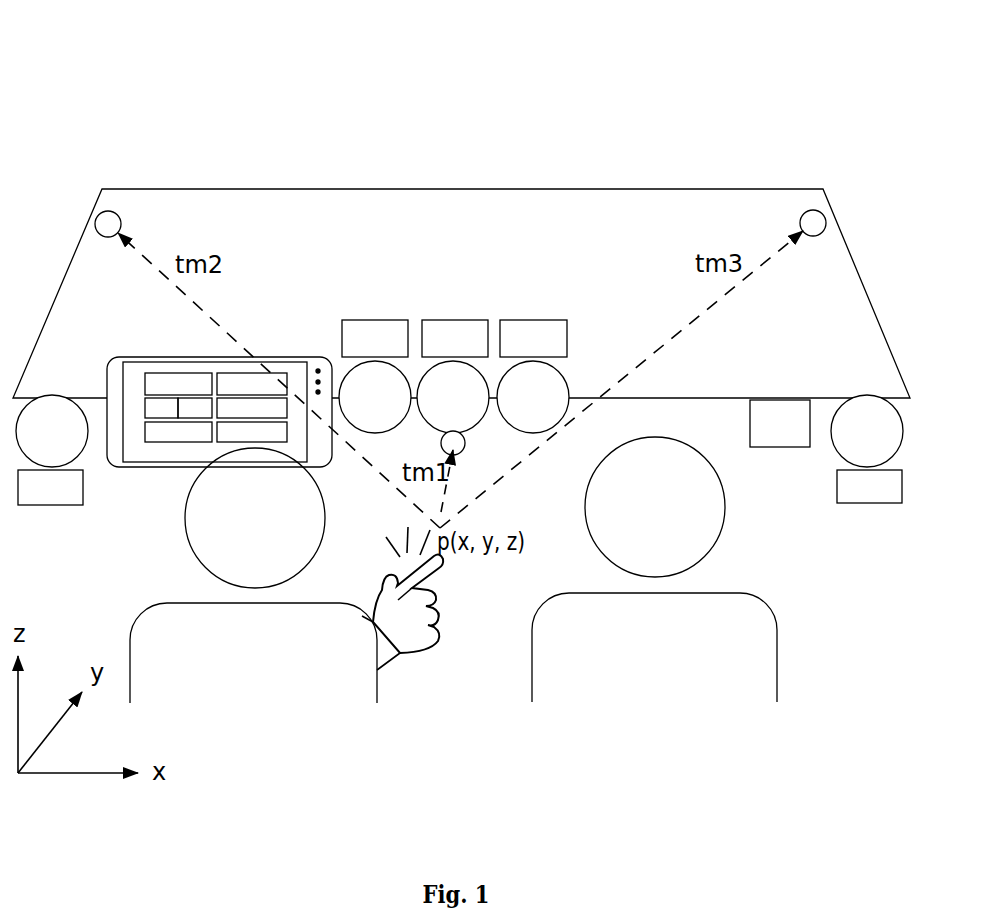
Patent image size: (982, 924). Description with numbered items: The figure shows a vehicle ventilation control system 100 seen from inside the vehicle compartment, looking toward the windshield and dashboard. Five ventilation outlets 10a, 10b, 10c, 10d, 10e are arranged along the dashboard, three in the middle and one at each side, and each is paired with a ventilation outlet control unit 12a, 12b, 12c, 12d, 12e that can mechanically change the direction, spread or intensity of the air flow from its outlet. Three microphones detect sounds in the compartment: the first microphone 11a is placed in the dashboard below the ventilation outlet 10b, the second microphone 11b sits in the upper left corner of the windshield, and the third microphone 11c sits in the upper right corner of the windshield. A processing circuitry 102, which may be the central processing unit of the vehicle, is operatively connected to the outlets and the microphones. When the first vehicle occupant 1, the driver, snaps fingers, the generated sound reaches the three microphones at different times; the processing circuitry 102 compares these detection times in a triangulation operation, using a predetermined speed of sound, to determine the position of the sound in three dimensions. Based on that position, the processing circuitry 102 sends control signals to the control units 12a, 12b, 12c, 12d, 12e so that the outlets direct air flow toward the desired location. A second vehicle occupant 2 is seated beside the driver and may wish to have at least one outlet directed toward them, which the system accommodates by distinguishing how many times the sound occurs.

The vehicle ventilation control system 100 is at (98, 85).
The first ventilation outlet 10a is at (375, 397).
The ventilation outlet 10b is at (453, 397).
The ventilation outlet 10c is at (533, 397).
The ventilation outlet 10d is at (52, 431).
The ventilation outlet 10e is at (867, 431).
The first microphone 11a is at (480, 444).
The second microphone 11b is at (135, 225).
The third microphone 11c is at (839, 224).
The first ventilation outlet control unit 12a is at (375, 338).
The ventilation outlet control unit 12b is at (455, 338).
The ventilation outlet control unit 12c is at (533, 338).
The ventilation outlet control unit 12d is at (50, 487).
The ventilation outlet control unit 12e is at (869, 486).
The processing circuitry 102 is at (780, 423).
The first vehicle occupant 1 is at (253, 575).
The second vehicle occupant 2 is at (654, 569).